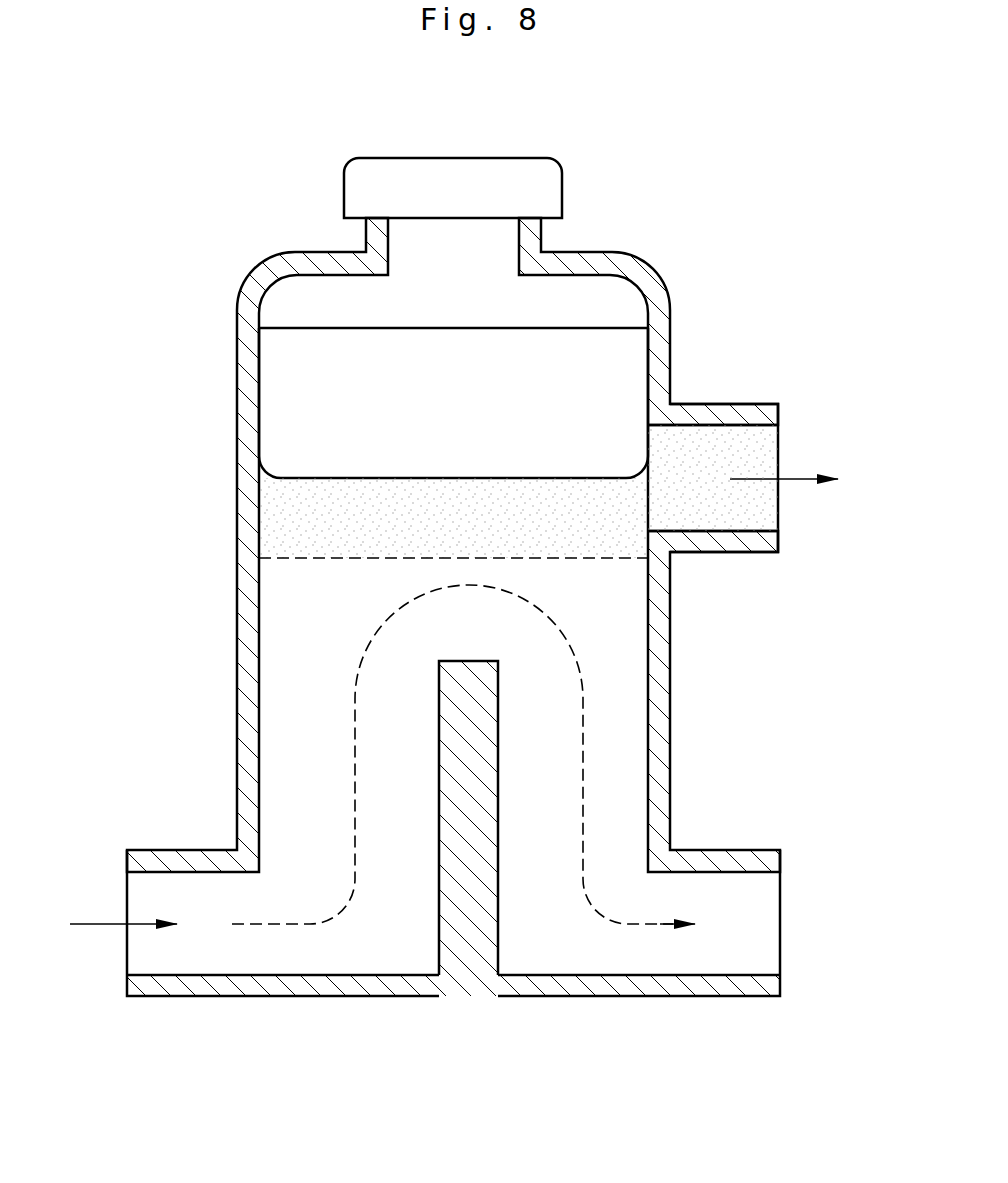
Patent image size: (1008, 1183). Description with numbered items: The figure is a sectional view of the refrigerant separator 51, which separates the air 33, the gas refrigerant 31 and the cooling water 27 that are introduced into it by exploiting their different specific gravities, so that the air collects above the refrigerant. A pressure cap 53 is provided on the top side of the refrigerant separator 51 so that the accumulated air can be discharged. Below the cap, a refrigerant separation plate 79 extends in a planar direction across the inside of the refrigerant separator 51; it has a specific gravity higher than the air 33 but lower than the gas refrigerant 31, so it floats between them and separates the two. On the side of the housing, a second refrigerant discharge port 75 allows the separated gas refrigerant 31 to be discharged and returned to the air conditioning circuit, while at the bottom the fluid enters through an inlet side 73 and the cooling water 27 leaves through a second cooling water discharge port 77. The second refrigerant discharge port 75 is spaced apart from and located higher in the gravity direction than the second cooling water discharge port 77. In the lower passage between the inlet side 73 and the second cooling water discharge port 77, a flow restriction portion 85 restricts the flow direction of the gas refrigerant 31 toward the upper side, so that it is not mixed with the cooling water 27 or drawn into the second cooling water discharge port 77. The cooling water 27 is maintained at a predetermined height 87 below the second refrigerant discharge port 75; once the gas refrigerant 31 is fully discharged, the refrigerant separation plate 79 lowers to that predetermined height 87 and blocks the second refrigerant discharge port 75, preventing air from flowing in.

The pressure cap 53 is at (461, 158).
The refrigerant separator 51 is at (628, 252).
The cooling water 27 is at (285, 710).
The second refrigerant discharge port 75 is at (735, 404).
The air 33 is at (283, 300).
The refrigerant separation plate 79 is at (284, 412).
The gas refrigerant 31 is at (285, 518).
The predetermined height 87 is at (573, 560).
The flow restriction portion 85 is at (477, 950).
The inlet pipe 73 is at (168, 988).
The second cooling water discharge port 77 is at (702, 988).